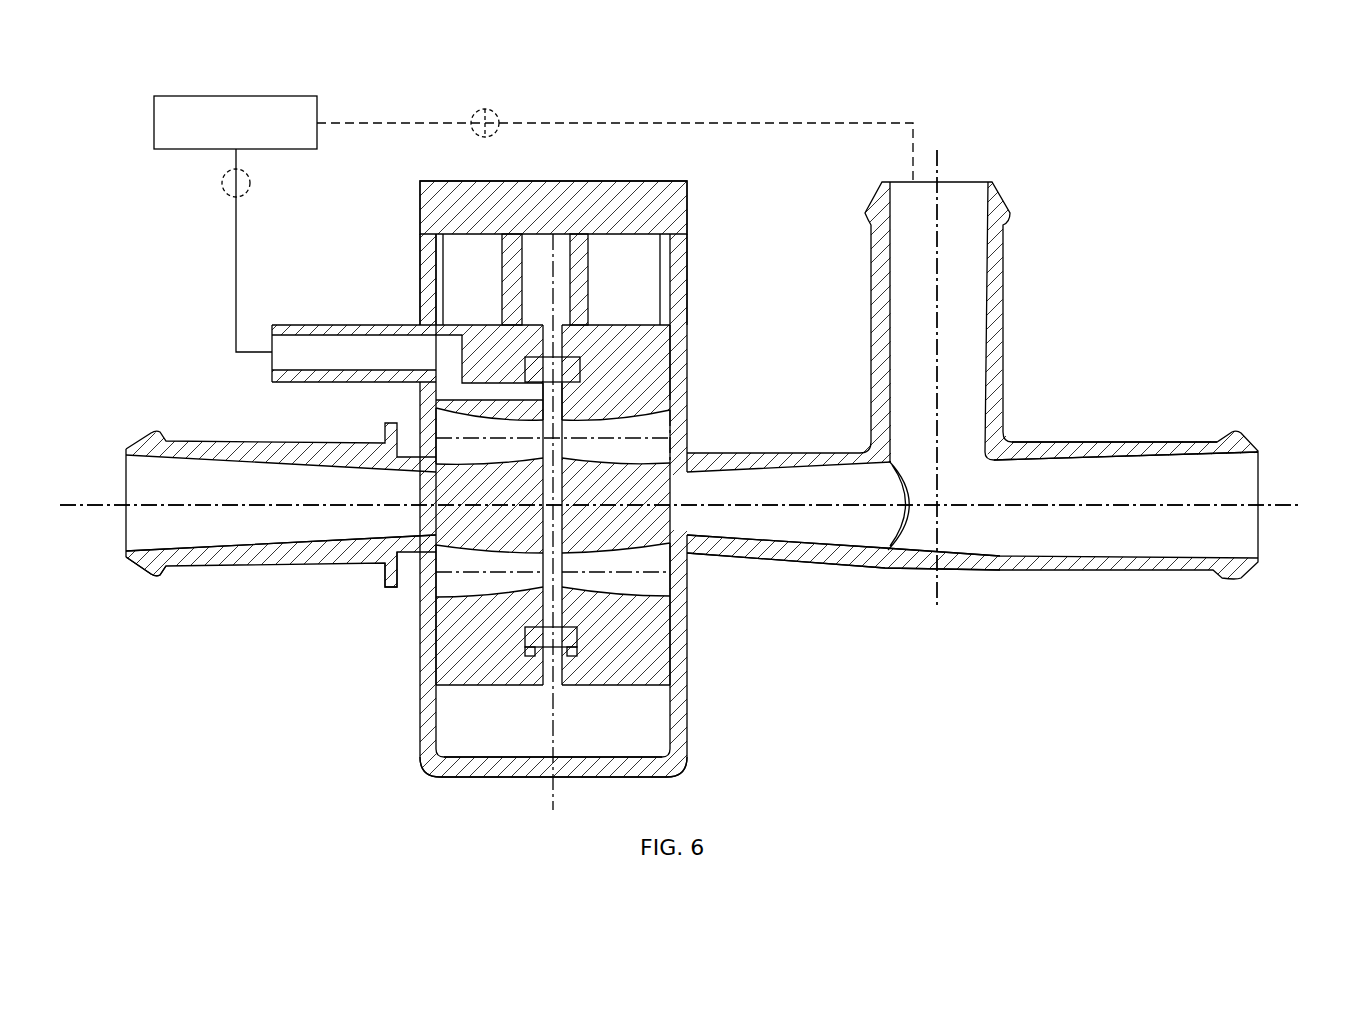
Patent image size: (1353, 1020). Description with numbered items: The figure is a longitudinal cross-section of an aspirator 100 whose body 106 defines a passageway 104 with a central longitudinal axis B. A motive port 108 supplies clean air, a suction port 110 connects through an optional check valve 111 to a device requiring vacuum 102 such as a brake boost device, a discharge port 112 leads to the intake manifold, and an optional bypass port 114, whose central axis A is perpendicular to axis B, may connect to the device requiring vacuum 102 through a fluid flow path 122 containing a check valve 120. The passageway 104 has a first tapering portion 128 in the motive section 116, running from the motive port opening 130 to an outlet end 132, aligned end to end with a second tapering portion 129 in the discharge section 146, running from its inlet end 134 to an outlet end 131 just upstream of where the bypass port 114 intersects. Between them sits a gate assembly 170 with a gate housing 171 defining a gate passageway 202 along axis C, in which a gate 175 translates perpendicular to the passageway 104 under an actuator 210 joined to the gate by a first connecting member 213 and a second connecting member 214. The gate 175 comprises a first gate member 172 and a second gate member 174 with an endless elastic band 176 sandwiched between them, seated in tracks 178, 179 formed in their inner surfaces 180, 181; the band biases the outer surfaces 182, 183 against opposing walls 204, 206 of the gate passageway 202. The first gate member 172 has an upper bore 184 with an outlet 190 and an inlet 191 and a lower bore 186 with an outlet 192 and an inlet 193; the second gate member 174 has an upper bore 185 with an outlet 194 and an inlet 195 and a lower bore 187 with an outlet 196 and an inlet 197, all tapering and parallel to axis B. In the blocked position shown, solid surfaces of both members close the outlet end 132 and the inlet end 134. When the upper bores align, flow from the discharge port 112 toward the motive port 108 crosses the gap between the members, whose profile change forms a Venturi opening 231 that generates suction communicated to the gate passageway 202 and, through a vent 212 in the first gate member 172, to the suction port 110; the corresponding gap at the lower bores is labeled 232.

The aspirator 100 is at (680, 350).
The device requiring vacuum 102 is at (241, 96).
The passageway 104 is at (272, 565).
The body 106 is at (283, 445).
The motive port 108 is at (126, 547).
The suction port 110 is at (305, 345).
The check valve 111 is at (222, 185).
The discharge port 112 is at (1250, 552).
The bypass port 114 is at (849, 327).
The motive section 116 is at (281, 465).
The check valve 120 is at (486, 109).
The fluid flow path 122 is at (783, 122).
The first tapering portion 128 is at (200, 566).
The second tapering portion 129 is at (788, 546).
The motive port opening 130 is at (126, 461).
The outlet end 131 is at (890, 542).
The outlet end 132 is at (427, 518).
The inlet end 134 is at (680, 522).
The discharge section 146 is at (1126, 423).
The gate assembly 170 is at (552, 524).
The gate housing 171 is at (690, 740).
The first gate member 172 is at (440, 668).
The second gate member 174 is at (655, 668).
The gate 175 is at (517, 722).
The endless elastic band 176 is at (540, 683).
The track 178 is at (530, 656).
The track 179 is at (572, 656).
The inner surface 180 is at (545, 353).
The inner surface 181 is at (560, 406).
The outer surface 182 is at (440, 630).
The outer surface 183 is at (672, 640).
The upper bore 184 is at (447, 423).
The upper bore 185 is at (685, 415).
The lower bore 186 is at (475, 552).
The lower bore 187 is at (625, 556).
The outlet 190 is at (440, 455).
The inlet 191 is at (525, 460).
The outlet 192 is at (525, 556).
The inlet 193 is at (443, 593).
The outlet 194 is at (578, 460).
The inlet 195 is at (678, 450).
The outlet 196 is at (662, 586).
The inlet 197 is at (570, 556).
The gate passageway 202 is at (683, 288).
The wall 204 is at (680, 360).
The wall 206 is at (428, 262).
The actuator 210 is at (690, 203).
The vent 212 is at (445, 367).
The first connecting member 213 is at (505, 282).
The second connecting member 214 is at (590, 258).
The Venturi opening 231 is at (519, 415).
The valve stem lower section 232 is at (586, 595).
The central longitudinal axis A is at (937, 598).
The central longitudinal axis B is at (1282, 505).
The longitudinal axis C is at (553, 793).